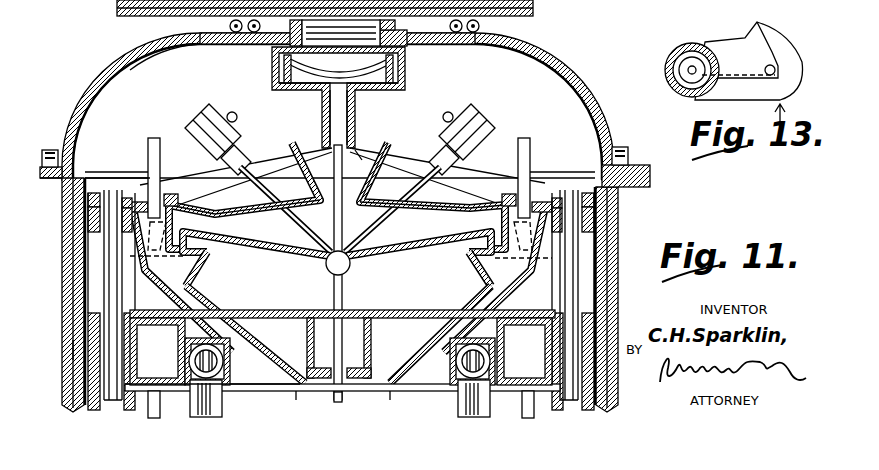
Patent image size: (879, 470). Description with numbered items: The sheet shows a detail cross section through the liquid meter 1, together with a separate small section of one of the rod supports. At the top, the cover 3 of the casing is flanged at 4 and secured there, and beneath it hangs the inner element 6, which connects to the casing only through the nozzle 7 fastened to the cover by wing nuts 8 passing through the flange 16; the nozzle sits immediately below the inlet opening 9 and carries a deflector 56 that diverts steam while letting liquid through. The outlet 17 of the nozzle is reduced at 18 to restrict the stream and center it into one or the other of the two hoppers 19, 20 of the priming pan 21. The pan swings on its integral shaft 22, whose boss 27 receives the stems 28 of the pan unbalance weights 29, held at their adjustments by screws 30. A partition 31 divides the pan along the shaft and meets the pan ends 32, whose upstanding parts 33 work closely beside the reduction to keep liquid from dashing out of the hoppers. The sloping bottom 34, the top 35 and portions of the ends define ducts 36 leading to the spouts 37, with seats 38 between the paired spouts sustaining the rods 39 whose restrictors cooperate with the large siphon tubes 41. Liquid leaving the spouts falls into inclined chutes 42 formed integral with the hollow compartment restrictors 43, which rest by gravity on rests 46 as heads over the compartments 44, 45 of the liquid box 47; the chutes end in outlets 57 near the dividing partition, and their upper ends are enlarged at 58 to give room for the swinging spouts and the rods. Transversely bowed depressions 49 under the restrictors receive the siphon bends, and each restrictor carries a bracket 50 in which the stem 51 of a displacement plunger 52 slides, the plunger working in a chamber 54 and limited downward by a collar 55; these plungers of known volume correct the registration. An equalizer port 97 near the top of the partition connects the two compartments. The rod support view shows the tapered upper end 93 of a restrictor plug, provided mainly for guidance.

In FIG. 11, the meter 1 is at (62, 298).
In FIG. 11, the cover 3 is at (565, 60).
In FIG. 11, the flange 4 is at (650, 186).
In FIG. 11, the inner element 6 is at (110, 176).
In FIG. 11, the nozzle 7 is at (400, 83).
In FIG. 11, the wing nuts 8 is at (228, 26).
In FIG. 11, the inlet opening 9 is at (250, 57).
In FIG. 11, the flange 16 is at (238, 58).
In FIG. 11, the outlet of the nozzle 17 is at (404, 92).
In FIG. 11, the reduction 18 is at (354, 110).
In FIG. 11, the hopper 19 is at (302, 150).
In FIG. 11, the hopper 20 is at (380, 150).
In FIG. 11, the priming pan 21 is at (392, 152).
In FIG. 11, the shaft 22 is at (350, 266).
In FIG. 11, the boss 27 is at (327, 266).
In FIG. 11, the stems 28 is at (258, 165).
In FIG. 11, the pan unbalance weights 29 is at (205, 128).
In FIG. 11, the screws 30 is at (232, 112).
In FIG. 11, the partition 31 is at (362, 152).
In FIG. 11, the pan ends 32 is at (198, 195).
In FIG. 11, the upstanding parts 33 is at (318, 142).
In FIG. 11, the bottom 34 is at (258, 250).
In FIG. 11, the top 35 is at (232, 212).
In FIG. 11, the ducts 36 is at (262, 222).
In FIG. 11, the spouts 37 is at (168, 196).
In FIG. 11, the seats 38 is at (205, 247).
In FIG. 11, the rods 39 is at (153, 140).
In FIG. 13, the rods 39 is at (795, 72).
In FIG. 11, the large siphon tubes 41 is at (148, 404).
In FIG. 11, the chutes 42 is at (226, 316).
In FIG. 11, the compartment restrictors 43 is at (266, 320).
In FIG. 11, the compartment 44 is at (432, 392).
In FIG. 11, the compartment 45 is at (272, 394).
In FIG. 11, the rests 46 is at (343, 396).
In FIG. 11, the liquid box 47 is at (74, 342).
In FIG. 11, the transversely bowed depressions 49 is at (230, 366).
In FIG. 11, the bracket 50 is at (88, 222).
In FIG. 11, the stem 51 is at (104, 248).
In FIG. 11, the displacement plunger 52 is at (88, 322).
In FIG. 11, the chambers 54 is at (341, 351).
In FIG. 11, the collars 55 is at (86, 200).
In FIG. 11, the deflector 56 is at (296, 64).
In FIG. 11, the outlets 57 is at (298, 394).
In FIG. 11, the enlargements 58 is at (152, 272).
In FIG. 13, the tapered end 93 is at (686, 88).
In FIG. 11, the equalizer port 97 is at (370, 334).